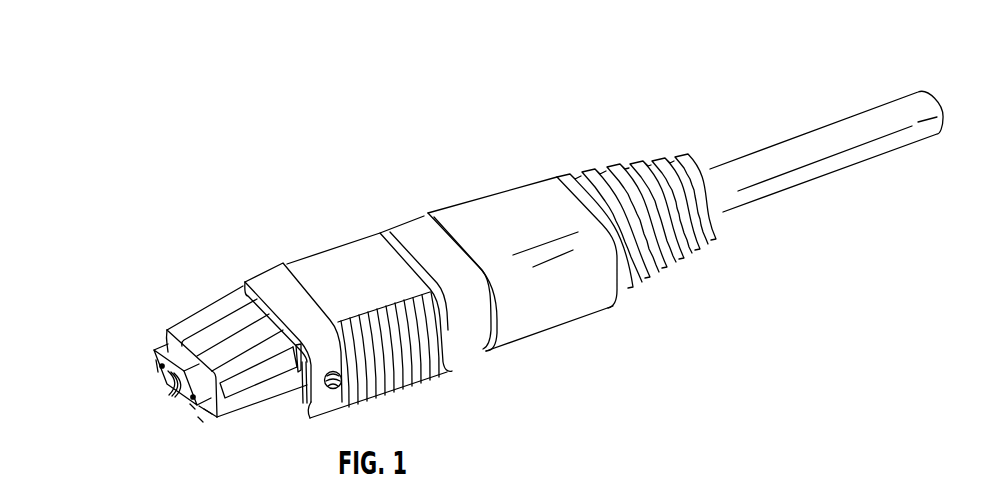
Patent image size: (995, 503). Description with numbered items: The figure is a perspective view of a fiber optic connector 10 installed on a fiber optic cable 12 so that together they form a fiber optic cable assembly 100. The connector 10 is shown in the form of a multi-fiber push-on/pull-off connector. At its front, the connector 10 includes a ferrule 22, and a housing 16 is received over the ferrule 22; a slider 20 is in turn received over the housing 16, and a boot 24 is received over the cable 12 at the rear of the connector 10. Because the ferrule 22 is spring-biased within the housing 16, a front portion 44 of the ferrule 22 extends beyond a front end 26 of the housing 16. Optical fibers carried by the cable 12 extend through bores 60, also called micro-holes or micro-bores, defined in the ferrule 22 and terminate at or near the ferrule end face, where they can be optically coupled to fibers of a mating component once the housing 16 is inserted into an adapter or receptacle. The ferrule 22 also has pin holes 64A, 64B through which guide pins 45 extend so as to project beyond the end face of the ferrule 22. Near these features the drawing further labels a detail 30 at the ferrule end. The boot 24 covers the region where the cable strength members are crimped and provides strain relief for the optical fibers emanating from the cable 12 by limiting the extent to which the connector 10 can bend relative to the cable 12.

The fiber optic cable assembly 100 is at (448, 45).
The fiber optic connector 10 is at (284, 183).
The fiber optic cable 12 is at (778, 142).
The housing 16 is at (201, 308).
The slider 20 is at (347, 244).
The ferrule 22 is at (156, 348).
The boot 24 is at (502, 184).
The front end 26 is at (207, 412).
The ferrule end face 30 is at (151, 366).
The front portion 44 is at (200, 423).
The guide pins 45 is at (192, 410).
The bores 60 is at (165, 385).
The pin hole 64A is at (194, 398).
The pin hole 64B is at (153, 377).